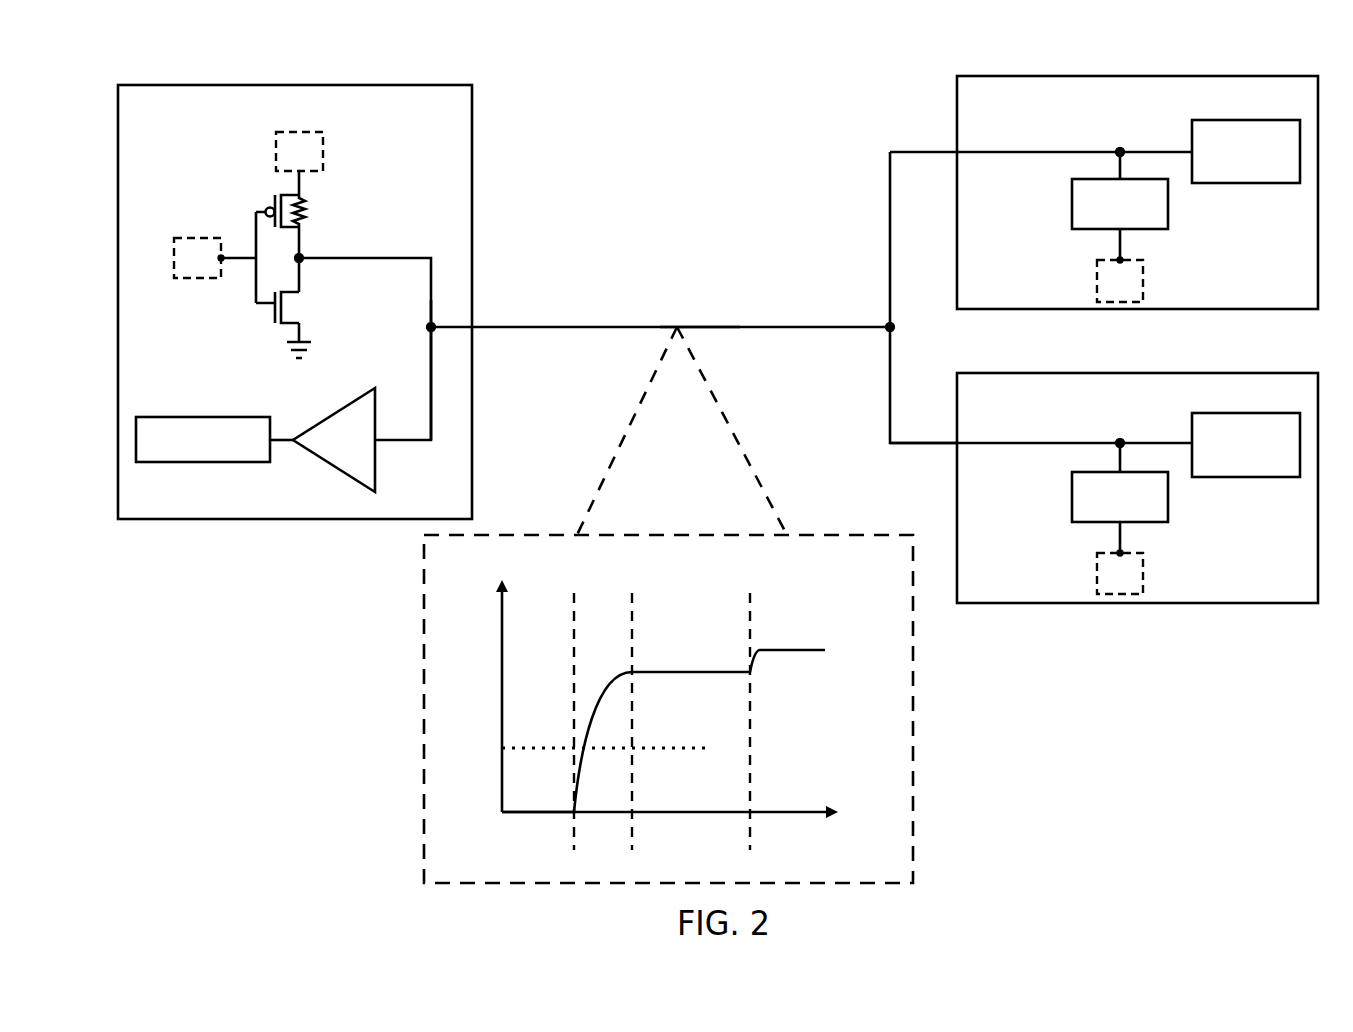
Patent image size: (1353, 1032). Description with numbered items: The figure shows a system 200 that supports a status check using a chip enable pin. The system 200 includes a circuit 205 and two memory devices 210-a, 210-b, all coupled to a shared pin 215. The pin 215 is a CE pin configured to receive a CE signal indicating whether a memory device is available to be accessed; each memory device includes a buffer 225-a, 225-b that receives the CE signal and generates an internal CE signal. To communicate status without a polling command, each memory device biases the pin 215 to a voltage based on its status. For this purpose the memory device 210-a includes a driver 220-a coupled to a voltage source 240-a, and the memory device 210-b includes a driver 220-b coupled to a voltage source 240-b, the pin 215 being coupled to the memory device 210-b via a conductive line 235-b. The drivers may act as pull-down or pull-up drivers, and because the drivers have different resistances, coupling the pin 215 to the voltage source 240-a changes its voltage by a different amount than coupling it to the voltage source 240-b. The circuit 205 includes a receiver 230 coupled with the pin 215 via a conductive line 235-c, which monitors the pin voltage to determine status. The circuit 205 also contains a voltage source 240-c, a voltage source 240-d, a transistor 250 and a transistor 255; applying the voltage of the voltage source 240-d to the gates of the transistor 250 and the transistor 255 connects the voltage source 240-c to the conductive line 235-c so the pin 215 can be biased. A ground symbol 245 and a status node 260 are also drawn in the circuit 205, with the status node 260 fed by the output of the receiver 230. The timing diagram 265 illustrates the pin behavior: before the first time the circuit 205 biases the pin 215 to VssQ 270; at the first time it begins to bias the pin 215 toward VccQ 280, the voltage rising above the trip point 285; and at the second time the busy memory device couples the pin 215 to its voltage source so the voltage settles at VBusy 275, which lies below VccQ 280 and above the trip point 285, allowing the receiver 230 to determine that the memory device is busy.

The system 200 is at (1222, 838).
The circuit 205 is at (323, 85).
The memory device 210-a is at (1163, 76).
The memory device 210-b is at (1163, 373).
The pin 215 is at (772, 289).
The driver 220-a is at (1072, 217).
The driver 220-b is at (1072, 510).
The buffer 225-a is at (1267, 183).
The buffer 225-b is at (1267, 477).
The receiver 230 is at (315, 457).
The conductive line 235-b is at (898, 445).
The conductive line 235-c is at (430, 358).
The voltage source 240-a is at (1103, 302).
The voltage source 240-b is at (1103, 594).
The voltage source 240-c is at (323, 152).
The voltage source 240-d is at (180, 278).
The ground 245 is at (303, 368).
The transistor 250 is at (270, 322).
The transistor 255 is at (270, 208).
The status node 260 is at (208, 462).
The timing diagram 265 is at (913, 712).
The voltage VssQ 270 is at (530, 817).
The voltage VBusy 275 is at (665, 672).
The voltage VccQ 280 is at (875, 612).
The trip point 285 is at (783, 711).